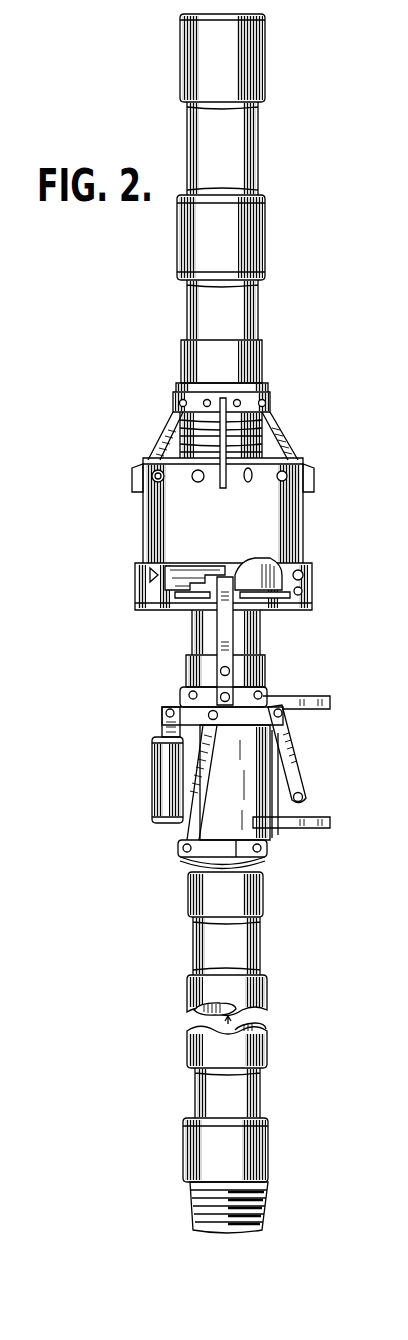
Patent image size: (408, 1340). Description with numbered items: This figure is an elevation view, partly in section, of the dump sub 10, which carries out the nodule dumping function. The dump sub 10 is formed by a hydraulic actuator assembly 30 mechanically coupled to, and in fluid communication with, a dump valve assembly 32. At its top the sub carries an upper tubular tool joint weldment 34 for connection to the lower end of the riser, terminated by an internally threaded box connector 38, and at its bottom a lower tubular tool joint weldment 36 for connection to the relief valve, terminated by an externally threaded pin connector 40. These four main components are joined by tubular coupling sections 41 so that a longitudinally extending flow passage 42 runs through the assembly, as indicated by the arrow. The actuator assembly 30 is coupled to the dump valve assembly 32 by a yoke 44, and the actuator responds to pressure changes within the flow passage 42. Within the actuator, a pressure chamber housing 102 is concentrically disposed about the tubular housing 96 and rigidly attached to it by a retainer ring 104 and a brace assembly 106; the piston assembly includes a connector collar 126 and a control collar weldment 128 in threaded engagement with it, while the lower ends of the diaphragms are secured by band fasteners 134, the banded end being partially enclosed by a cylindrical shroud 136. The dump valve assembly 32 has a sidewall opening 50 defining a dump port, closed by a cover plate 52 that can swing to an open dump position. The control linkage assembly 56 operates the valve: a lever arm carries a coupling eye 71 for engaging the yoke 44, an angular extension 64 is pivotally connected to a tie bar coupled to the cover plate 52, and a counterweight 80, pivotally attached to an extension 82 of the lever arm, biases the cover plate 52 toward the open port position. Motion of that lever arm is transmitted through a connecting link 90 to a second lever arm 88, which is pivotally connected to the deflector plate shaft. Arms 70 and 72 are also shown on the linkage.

The dump sub 10 is at (305, 282).
The hydraulic actuator assembly 30 is at (322, 458).
The dump valve assembly 32 is at (322, 687).
The upper tubular tool joint weldment 34 is at (258, 156).
The lower tubular tool joint weldment 36 is at (260, 1102).
The internally threaded box connector 38 is at (276, 74).
The externally threaded pin connector 40 is at (280, 1209).
The tubular coupling sections 41 is at (258, 320).
The flow passage 42 is at (226, 1034).
The yoke 44 is at (228, 636).
The sidewall opening 50 is at (272, 776).
The cover plate 52 is at (272, 848).
The control linkage assembly 56 is at (156, 689).
The angular extension 64 is at (296, 758).
The upper arm 70 is at (318, 710).
The coupling eye 71 is at (216, 720).
The lower arm 72 is at (313, 828).
The counterweight 80 is at (165, 786).
The extension 82 is at (162, 714).
The lever arm 88 is at (236, 855).
The connecting link 90 is at (202, 778).
The tubular housing 96 is at (190, 450).
The pressure chamber housing 102 is at (296, 530).
The retainer ring 104 is at (270, 396).
The brace assembly 106 is at (172, 424).
The connector collar 126 is at (262, 546).
The control collar weldment 128 is at (235, 572).
The band fasteners 134 is at (300, 590).
The cylindrical shroud 136 is at (312, 576).